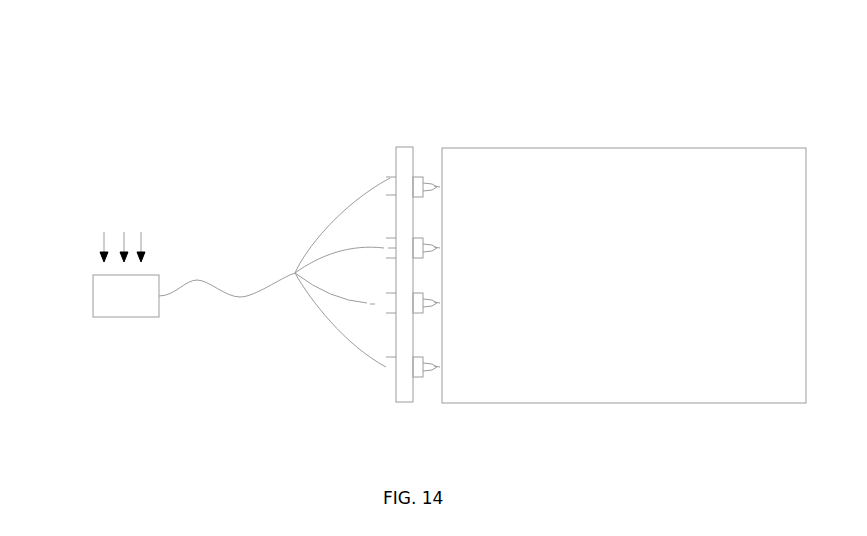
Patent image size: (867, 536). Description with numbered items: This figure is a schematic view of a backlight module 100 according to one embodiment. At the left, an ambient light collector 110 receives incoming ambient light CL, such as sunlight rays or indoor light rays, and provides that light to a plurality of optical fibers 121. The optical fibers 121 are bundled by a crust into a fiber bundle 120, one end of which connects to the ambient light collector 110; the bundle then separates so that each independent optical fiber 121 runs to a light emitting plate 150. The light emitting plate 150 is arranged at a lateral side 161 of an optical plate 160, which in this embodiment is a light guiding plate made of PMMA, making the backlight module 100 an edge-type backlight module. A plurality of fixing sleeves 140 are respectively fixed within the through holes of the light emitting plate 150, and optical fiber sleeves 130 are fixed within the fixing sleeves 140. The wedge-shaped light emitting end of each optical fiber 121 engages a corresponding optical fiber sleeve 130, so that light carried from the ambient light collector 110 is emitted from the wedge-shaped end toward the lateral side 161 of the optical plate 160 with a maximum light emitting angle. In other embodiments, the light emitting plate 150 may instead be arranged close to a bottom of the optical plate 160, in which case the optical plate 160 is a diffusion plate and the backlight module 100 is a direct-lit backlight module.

The backlight module 100 is at (511, 83).
The ambient light collector 110 is at (113, 297).
The collected light CL is at (122, 240).
The fiber bundle 120 is at (241, 298).
The optical fiber 121 is at (347, 203).
The fixing sleeve 140 is at (389, 176).
The light emitting plate 150 is at (403, 388).
The optical fiber sleeve 130 is at (428, 375).
The optical plate 160 is at (668, 376).
The lateral side 161 is at (442, 193).